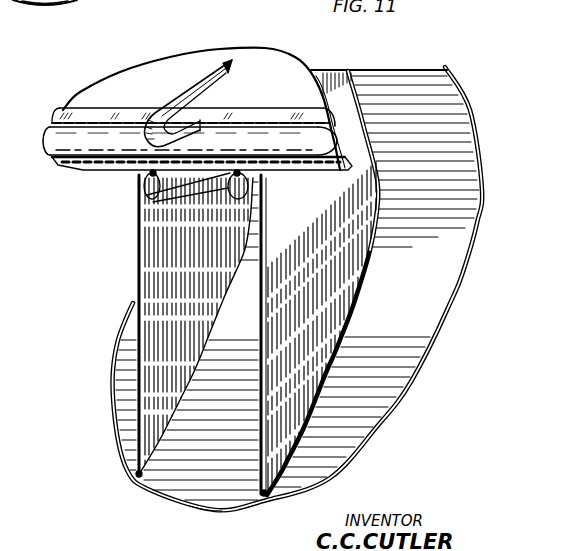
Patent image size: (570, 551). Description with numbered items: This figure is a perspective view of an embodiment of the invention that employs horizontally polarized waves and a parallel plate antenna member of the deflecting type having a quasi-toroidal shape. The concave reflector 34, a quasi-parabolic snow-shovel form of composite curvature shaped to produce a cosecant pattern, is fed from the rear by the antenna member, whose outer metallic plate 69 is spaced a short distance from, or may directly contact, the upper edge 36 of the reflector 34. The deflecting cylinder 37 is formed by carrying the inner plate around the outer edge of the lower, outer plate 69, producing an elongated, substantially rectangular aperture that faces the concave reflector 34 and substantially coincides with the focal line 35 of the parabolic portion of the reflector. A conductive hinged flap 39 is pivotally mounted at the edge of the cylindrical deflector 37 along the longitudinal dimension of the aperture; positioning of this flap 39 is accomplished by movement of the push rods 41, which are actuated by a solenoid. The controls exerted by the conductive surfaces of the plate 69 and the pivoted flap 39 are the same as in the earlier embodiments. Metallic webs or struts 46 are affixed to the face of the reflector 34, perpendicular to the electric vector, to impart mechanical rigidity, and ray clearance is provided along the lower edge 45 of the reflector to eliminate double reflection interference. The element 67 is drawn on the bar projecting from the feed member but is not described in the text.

The concave reflector 34 is at (447, 308).
The focal line 35 is at (183, 110).
The upper edge 36 is at (323, 70).
The deflecting cylinder 37 is at (46, 142).
The hinged flap 39 is at (339, 172).
The push rods 41 is at (206, 187).
The lower edge 45 is at (211, 513).
The metallic webs 46 is at (262, 310).
The coupling bar 67 is at (227, 74).
The outer metallic plate 69 is at (285, 65).